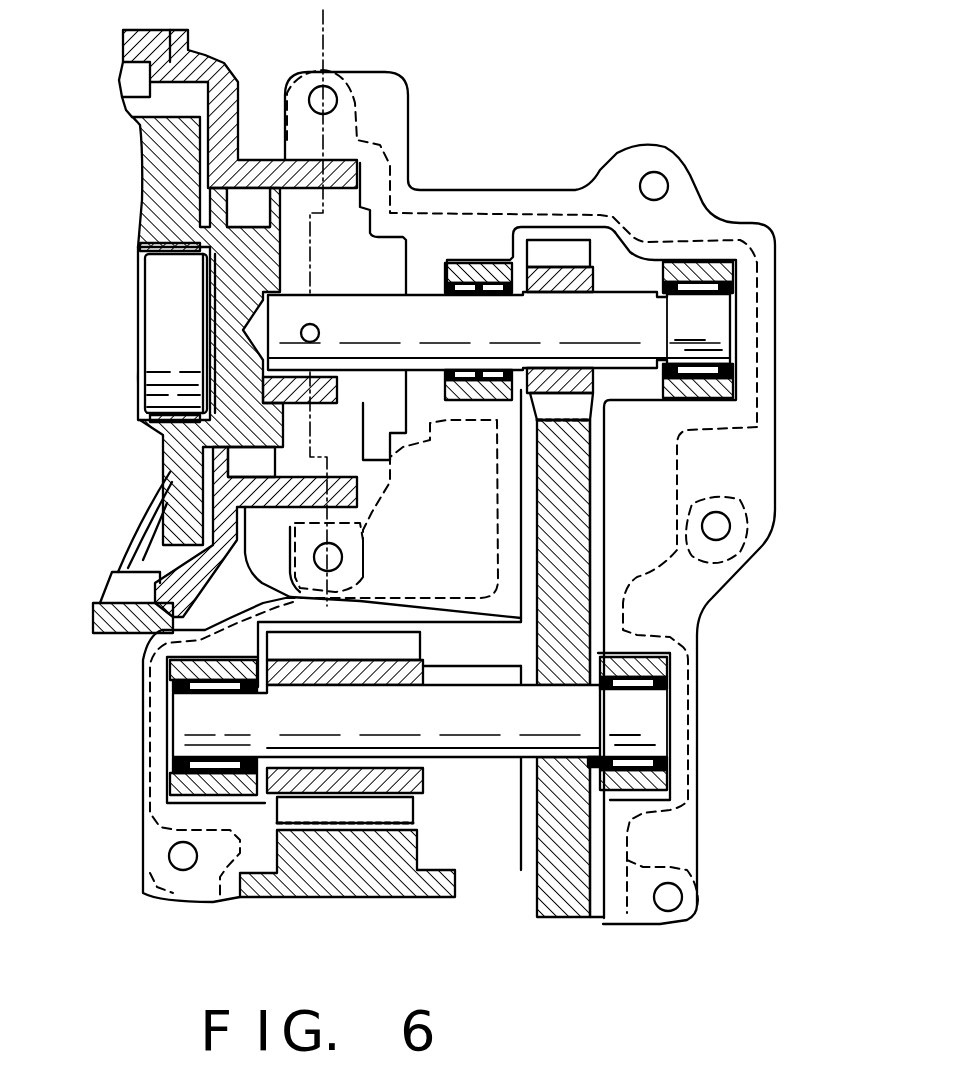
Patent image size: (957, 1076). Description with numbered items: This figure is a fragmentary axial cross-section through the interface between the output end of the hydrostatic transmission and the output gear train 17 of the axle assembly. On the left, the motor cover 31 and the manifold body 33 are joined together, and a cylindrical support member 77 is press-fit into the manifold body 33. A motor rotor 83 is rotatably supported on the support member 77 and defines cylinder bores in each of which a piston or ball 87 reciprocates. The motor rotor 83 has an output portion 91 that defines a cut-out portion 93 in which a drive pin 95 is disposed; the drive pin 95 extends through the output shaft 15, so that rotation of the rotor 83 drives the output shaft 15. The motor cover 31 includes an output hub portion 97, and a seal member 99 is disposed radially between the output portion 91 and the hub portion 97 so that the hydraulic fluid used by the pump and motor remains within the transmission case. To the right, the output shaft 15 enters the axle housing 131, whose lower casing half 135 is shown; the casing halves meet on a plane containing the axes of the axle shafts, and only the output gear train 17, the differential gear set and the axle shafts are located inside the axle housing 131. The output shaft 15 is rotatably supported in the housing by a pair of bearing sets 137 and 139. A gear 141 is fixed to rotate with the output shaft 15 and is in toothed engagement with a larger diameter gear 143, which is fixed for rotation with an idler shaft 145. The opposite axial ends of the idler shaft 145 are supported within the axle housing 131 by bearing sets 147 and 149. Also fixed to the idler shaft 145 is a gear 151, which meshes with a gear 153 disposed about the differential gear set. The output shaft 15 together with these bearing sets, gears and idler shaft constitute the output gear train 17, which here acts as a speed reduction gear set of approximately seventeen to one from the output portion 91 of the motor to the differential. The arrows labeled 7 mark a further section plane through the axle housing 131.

The section line 7 is at (330, 20).
The output shaft 15 is at (397, 307).
The output gear train 17 is at (473, 576).
The motor cover 31 is at (217, 73).
The manifold body 33 is at (103, 617).
The cylindrical support member 77 is at (167, 240).
The motor rotor 83 is at (160, 175).
The piston or ball 87 is at (143, 530).
The output portion 91 is at (257, 260).
The cut-out portion 93 is at (343, 390).
The drive pin 95 is at (321, 335).
The output hub portion 97 is at (262, 160).
The seal member 99 is at (247, 463).
The axle housing 131 is at (760, 551).
The lower casing half 135 is at (747, 310).
The bearing set 137 is at (483, 383).
The bearing set 139 is at (700, 397).
The gear 141 is at (557, 280).
The gear 143 is at (557, 497).
The idler shaft 145 is at (499, 723).
The bearing set 147 is at (145, 787).
The bearing set 149 is at (670, 777).
The gear 151 is at (400, 662).
The gear 153 is at (377, 870).